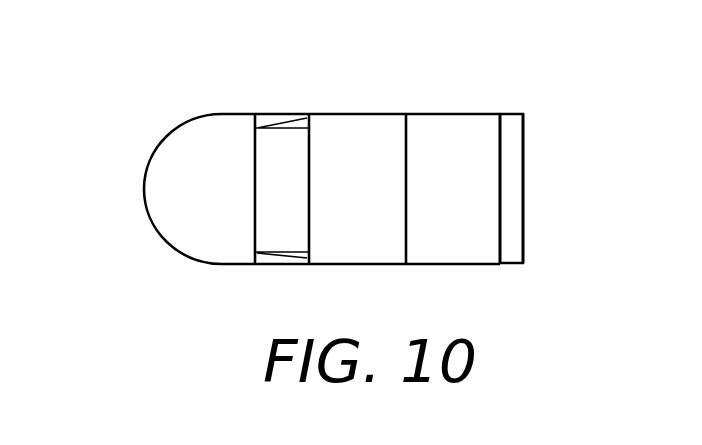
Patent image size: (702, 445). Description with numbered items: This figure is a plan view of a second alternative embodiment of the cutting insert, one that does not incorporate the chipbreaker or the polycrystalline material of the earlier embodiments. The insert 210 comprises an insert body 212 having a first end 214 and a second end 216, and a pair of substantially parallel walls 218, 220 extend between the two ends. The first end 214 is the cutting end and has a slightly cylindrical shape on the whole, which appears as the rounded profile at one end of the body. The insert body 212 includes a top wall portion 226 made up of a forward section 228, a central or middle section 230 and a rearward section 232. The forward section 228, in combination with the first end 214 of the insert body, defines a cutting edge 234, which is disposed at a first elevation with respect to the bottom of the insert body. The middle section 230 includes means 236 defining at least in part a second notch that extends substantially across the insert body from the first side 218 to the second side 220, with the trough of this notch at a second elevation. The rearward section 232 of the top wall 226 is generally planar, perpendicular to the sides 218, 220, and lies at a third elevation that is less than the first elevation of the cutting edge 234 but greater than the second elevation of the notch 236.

The insert 210 is at (143, 139).
The insert body 212 is at (497, 263).
The first end 214 is at (145, 196).
The second end 216 is at (512, 212).
The wall 218 is at (452, 265).
The wall 220 is at (463, 112).
The top wall portion 226 is at (232, 127).
The forward section 228 is at (203, 137).
The middle section 230 is at (376, 128).
The rearward section 232 is at (480, 152).
The cutting edge 234 is at (167, 248).
The means defining a second notch 236 is at (362, 243).